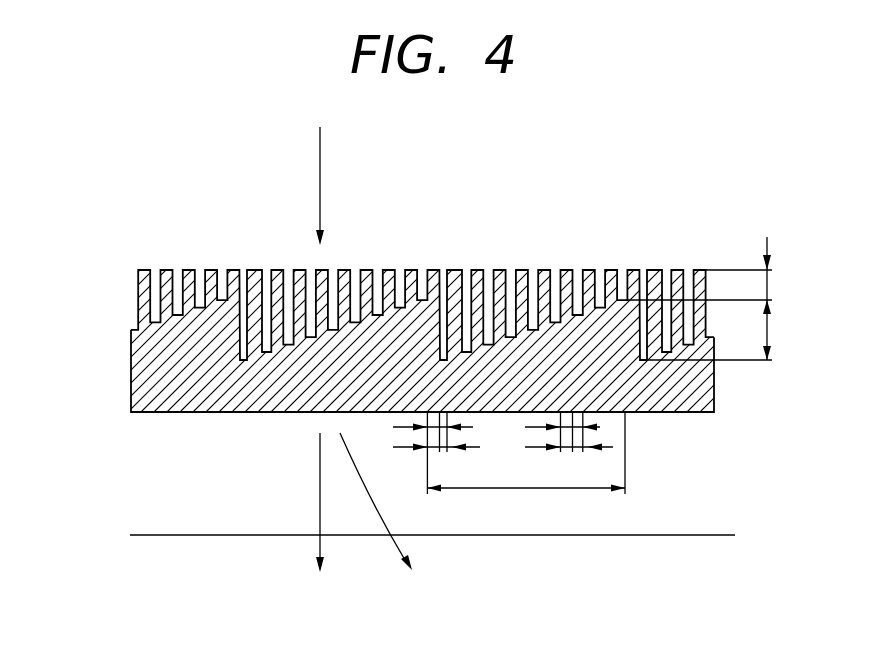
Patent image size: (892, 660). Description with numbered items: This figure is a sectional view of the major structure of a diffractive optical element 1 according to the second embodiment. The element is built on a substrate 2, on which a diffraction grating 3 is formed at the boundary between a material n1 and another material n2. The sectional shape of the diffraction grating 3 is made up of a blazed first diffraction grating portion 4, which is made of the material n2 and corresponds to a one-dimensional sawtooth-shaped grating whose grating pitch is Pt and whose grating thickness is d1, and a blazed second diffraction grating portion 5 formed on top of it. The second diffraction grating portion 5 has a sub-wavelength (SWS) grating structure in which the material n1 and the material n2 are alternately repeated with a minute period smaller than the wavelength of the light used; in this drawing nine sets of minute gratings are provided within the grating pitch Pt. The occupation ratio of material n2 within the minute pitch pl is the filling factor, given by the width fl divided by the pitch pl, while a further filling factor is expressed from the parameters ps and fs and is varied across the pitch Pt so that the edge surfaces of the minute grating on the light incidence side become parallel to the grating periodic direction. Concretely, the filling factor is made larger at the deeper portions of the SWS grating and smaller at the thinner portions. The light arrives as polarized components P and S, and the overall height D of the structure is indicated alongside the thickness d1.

The diffractive optical element 1 is at (435, 310).
The substrate 2 is at (688, 502).
The diffraction grating 3 is at (435, 333).
The first diffraction grating portion 4 is at (400, 371).
The second diffraction grating portion 5 is at (140, 288).
The material n1(λ) n1 is at (245, 247).
The material n2(λ) n2 is at (241, 413).
The P-polarized light P is at (342, 366).
The S-polarized light S is at (383, 517).
The height of protrusions D is at (710, 268).
The grating thickness d1 is at (726, 330).
The grating pitch Pt is at (526, 465).
The SWS grating pitch pl is at (450, 451).
The filling factor pitch parameter ps is at (572, 457).
The material occupation width fl is at (443, 432).
The filling factor width parameter fs is at (573, 432).